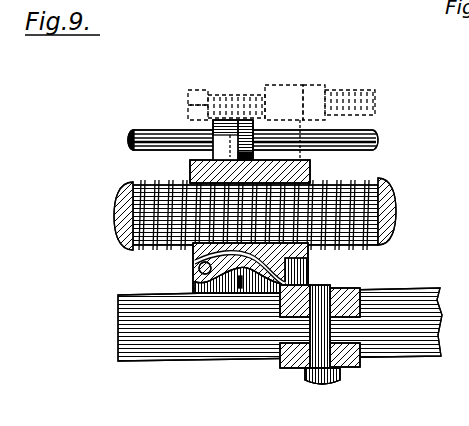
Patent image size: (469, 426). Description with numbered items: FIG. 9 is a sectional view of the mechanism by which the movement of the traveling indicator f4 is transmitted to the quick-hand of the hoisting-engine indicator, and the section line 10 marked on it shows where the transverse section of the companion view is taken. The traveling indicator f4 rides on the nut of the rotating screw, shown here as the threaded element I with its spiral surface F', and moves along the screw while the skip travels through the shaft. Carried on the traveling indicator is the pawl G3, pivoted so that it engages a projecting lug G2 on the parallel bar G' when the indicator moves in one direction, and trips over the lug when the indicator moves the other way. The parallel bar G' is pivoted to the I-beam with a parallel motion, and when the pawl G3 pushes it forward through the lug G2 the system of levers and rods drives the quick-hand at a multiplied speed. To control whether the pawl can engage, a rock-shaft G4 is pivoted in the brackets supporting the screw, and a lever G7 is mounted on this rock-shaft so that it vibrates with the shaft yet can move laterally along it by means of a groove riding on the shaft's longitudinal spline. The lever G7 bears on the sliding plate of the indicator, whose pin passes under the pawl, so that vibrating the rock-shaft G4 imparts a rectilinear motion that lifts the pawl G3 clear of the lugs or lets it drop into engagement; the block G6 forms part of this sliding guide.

The section line 10 is at (228, 90).
The lever G7 is at (246, 128).
The nut (dotted) I is at (343, 92).
The rock-shaft G4 is at (162, 133).
The traveling indicator f4 is at (310, 163).
The coil spring F' is at (265, 214).
The cam block G6 is at (300, 267).
The parallel bar G' is at (258, 324).
The pawl G3 is at (222, 272).
The projecting lug G2 is at (292, 310).